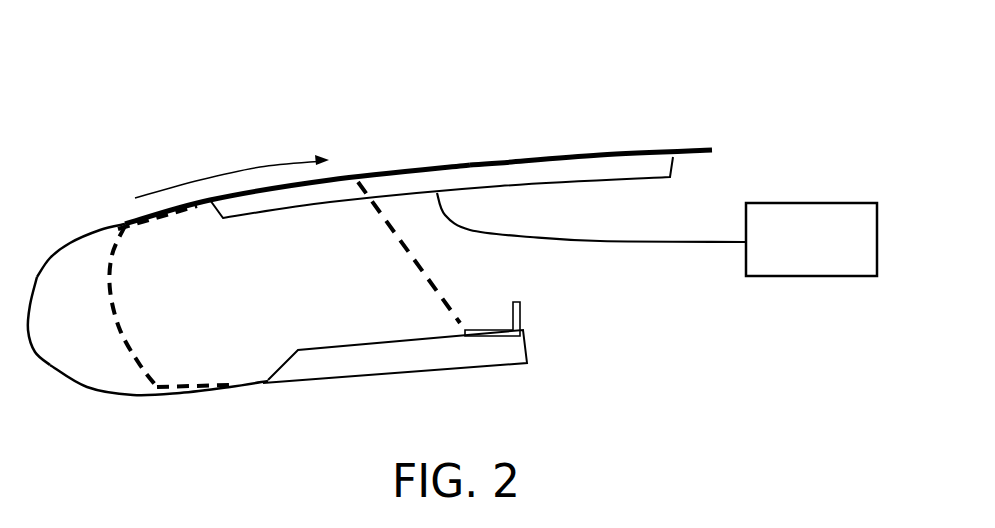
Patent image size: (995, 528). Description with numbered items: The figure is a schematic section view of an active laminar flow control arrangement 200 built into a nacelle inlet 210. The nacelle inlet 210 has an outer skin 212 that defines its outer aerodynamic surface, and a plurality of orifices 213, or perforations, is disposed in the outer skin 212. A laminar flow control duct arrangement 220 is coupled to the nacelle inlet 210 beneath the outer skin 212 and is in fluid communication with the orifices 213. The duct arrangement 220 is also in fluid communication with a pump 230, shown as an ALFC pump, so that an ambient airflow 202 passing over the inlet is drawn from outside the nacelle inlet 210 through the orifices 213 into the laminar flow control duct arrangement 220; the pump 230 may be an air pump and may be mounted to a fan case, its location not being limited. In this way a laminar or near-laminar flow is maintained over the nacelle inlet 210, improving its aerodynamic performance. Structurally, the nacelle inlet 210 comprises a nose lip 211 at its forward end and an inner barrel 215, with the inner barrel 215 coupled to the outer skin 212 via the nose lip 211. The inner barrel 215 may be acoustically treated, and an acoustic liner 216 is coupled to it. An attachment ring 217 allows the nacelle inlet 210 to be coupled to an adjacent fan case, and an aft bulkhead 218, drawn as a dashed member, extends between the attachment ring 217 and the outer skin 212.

The active laminar flow control arrangement 200 is at (257, 78).
The ambient airflow 202 is at (195, 200).
The nacelle inlet 210 is at (103, 228).
The nose lip 211 is at (38, 285).
The outer skin 212 is at (430, 170).
The orifices 213 is at (497, 162).
The inner barrel 215 is at (277, 385).
The acoustic liner 216 is at (382, 358).
The attachment ring 217 is at (522, 318).
The aft bulkhead 218 is at (427, 273).
The laminar flow control duct arrangement 220 is at (285, 200).
The pump 230 is at (794, 203).